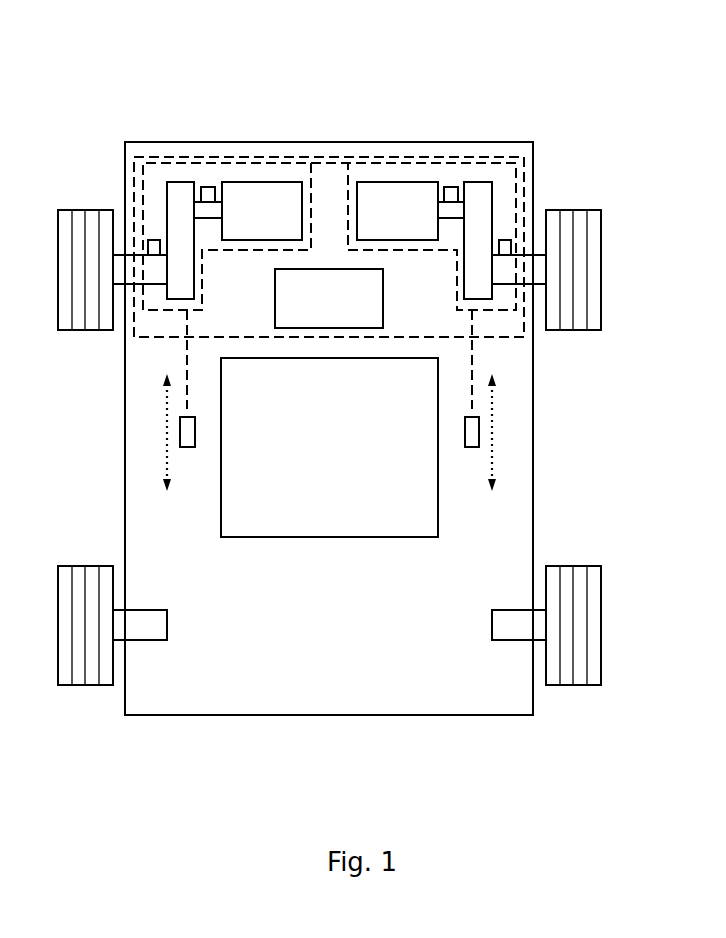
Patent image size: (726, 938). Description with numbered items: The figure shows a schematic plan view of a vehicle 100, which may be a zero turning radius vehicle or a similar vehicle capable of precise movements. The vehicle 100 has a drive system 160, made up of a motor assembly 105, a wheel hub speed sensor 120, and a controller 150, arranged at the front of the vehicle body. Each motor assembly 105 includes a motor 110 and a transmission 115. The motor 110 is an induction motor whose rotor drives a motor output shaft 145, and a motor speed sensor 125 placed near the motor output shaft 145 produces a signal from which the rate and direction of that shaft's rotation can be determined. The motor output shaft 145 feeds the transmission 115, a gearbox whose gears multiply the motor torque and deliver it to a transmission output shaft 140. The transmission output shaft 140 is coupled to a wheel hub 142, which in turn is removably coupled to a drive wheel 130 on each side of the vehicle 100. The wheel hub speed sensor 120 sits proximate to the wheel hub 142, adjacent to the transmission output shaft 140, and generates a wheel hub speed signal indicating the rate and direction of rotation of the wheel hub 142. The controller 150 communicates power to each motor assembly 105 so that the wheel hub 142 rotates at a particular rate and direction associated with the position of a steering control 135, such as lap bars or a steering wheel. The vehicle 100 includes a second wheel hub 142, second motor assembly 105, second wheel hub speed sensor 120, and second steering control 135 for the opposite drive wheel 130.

The vehicle 100 is at (140, 537).
The motor assembly 105 is at (153, 163).
The motor 110 is at (300, 182).
The transmission 115 is at (182, 182).
The wheel hub speed sensor 120 is at (154, 240).
The motor speed sensor 125 is at (212, 187).
The drive wheel 130 is at (576, 210).
The steering control 135 is at (475, 430).
The transmission output shaft 140 is at (523, 268).
The wheel hub 142 is at (126, 232).
The motor output shaft 145 is at (451, 211).
The controller 150 is at (350, 308).
The drive system 160 is at (413, 157).